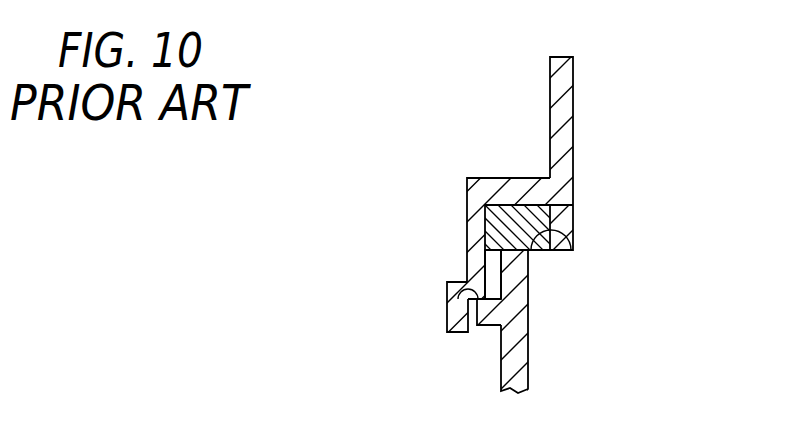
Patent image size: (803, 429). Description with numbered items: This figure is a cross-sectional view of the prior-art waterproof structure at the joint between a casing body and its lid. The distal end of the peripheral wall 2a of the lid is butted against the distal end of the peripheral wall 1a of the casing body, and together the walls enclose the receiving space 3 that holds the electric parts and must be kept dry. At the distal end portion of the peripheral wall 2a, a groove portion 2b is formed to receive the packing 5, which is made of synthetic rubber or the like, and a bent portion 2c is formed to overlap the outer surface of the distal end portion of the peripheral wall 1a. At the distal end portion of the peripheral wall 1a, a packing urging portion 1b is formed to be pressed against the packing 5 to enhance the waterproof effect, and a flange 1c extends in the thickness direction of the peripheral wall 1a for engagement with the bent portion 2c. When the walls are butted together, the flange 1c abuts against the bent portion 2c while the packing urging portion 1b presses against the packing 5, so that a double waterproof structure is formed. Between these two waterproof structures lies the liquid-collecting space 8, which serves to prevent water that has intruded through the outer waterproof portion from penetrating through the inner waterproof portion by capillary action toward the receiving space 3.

The peripheral wall of the lid 2a is at (573, 99).
The groove portion 2b is at (475, 226).
The bent portion 2c is at (457, 288).
The peripheral wall of the casing body 1a is at (519, 343).
The packing urging portion 1b is at (545, 232).
The flange 1c is at (483, 320).
The packing 5 is at (509, 210).
The liquid-collecting space 8 is at (495, 265).
The receiving space 3 is at (689, 333).